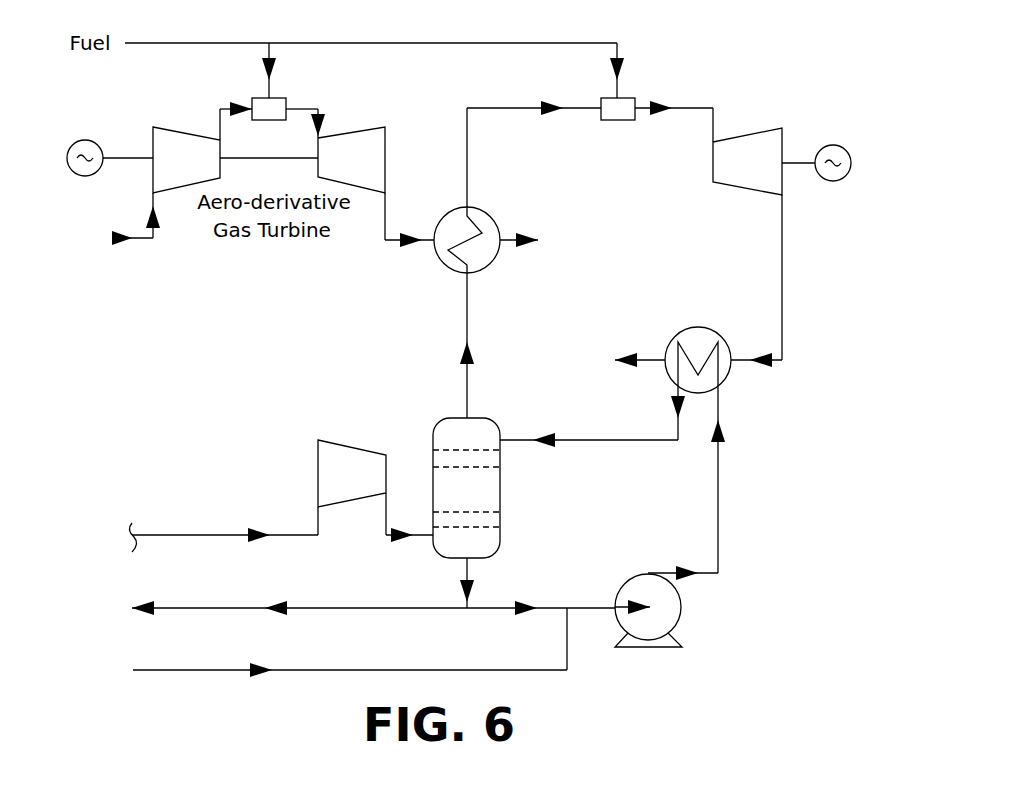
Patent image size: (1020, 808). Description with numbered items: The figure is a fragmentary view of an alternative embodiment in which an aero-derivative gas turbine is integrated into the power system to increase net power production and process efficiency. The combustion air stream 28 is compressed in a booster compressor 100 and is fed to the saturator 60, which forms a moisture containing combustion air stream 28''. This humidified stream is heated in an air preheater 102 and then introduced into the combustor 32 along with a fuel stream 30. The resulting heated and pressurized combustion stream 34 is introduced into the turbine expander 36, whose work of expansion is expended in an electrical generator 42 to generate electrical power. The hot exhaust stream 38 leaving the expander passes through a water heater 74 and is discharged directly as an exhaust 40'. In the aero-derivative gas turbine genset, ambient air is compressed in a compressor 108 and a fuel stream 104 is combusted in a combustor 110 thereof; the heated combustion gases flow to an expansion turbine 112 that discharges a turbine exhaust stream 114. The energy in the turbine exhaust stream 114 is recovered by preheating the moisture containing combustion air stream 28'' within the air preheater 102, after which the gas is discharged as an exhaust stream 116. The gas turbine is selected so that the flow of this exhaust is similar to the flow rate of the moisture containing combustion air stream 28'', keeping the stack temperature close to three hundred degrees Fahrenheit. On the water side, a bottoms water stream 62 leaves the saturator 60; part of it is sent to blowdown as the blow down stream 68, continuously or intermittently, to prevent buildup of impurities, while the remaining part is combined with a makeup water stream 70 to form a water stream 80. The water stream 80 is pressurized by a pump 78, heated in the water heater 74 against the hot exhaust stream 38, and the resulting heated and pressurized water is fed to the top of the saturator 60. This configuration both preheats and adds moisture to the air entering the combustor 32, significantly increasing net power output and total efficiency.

The fuel stream 104 is at (263, 54).
The combustor 110 is at (278, 102).
The compressor 108 is at (175, 170).
The expansion turbine 112 is at (353, 153).
The turbine exhaust stream 114 is at (395, 237).
The air preheater 102 is at (455, 225).
The exhaust stream 116 is at (510, 233).
The fuel stream 30 is at (556, 43).
The combustor 32 is at (625, 102).
The heated and pressurized combustion stream 34 is at (717, 112).
The turbine expander 36 is at (768, 153).
The electrical generator 42 is at (843, 157).
The hot exhaust stream 38 is at (782, 265).
The exhaust 40' is at (673, 369).
The water heater 74 is at (702, 387).
The saturator 60 is at (493, 483).
The moisture containing combustion air stream 28'' is at (441, 345).
The combustion air stream 28 is at (223, 521).
The booster compressor 100 is at (348, 490).
The bottoms water stream 62 is at (467, 568).
The blow down stream 68 is at (332, 608).
The makeup water stream 70 is at (402, 670).
The water stream 80 is at (594, 606).
The pump 78 is at (672, 602).